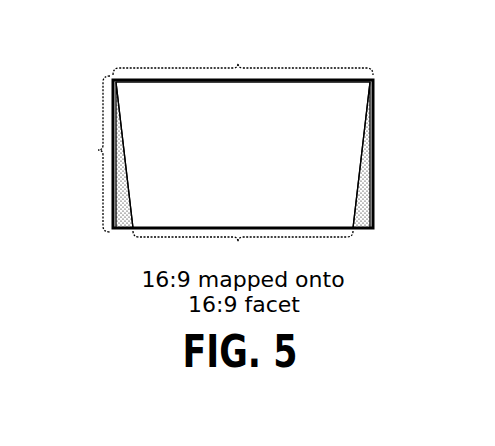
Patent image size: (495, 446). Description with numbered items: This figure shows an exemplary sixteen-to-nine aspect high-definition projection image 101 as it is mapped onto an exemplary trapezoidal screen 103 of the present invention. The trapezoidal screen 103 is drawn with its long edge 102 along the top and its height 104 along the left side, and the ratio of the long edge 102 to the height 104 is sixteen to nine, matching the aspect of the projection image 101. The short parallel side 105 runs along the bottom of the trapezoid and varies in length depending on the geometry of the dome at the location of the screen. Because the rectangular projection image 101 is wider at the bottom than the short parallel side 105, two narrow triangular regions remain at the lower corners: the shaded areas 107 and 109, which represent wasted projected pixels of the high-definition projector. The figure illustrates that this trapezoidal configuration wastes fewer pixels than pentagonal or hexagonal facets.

The 16:9 high-definition projection image 101 is at (372, 140).
The long edge 102 is at (243, 56).
The trapezoidal screen 103 is at (357, 103).
The height 104 is at (82, 154).
The short parallel side 105 is at (243, 251).
The shaded area 107 is at (120, 229).
The shaded area 109 is at (364, 206).